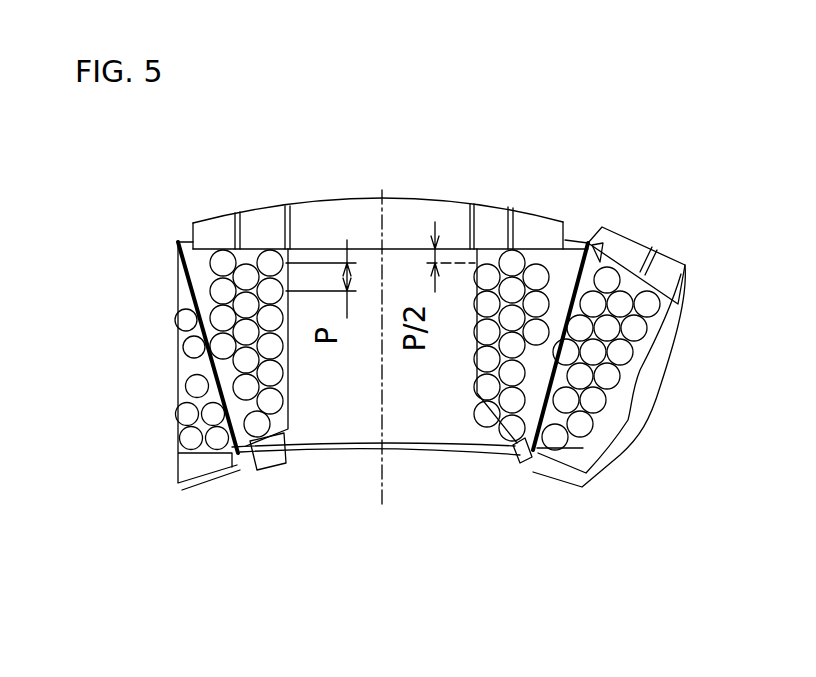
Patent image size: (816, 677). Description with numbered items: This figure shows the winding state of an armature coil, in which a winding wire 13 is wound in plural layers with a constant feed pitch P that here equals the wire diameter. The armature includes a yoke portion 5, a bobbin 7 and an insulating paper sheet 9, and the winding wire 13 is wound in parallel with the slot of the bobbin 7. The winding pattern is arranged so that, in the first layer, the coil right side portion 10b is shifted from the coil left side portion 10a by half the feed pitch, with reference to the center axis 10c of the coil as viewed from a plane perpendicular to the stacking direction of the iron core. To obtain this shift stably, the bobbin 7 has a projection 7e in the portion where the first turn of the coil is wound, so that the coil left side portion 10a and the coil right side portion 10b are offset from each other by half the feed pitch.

The yoke portion 5 is at (330, 452).
The bobbin 7 is at (302, 212).
The projection 7e is at (483, 258).
The insulating paper sheet 9 is at (603, 240).
The coil left side portion 10a is at (268, 464).
The coil right side portion 10b is at (513, 348).
The center axis 10c is at (382, 195).
The winding wire 13 is at (267, 262).